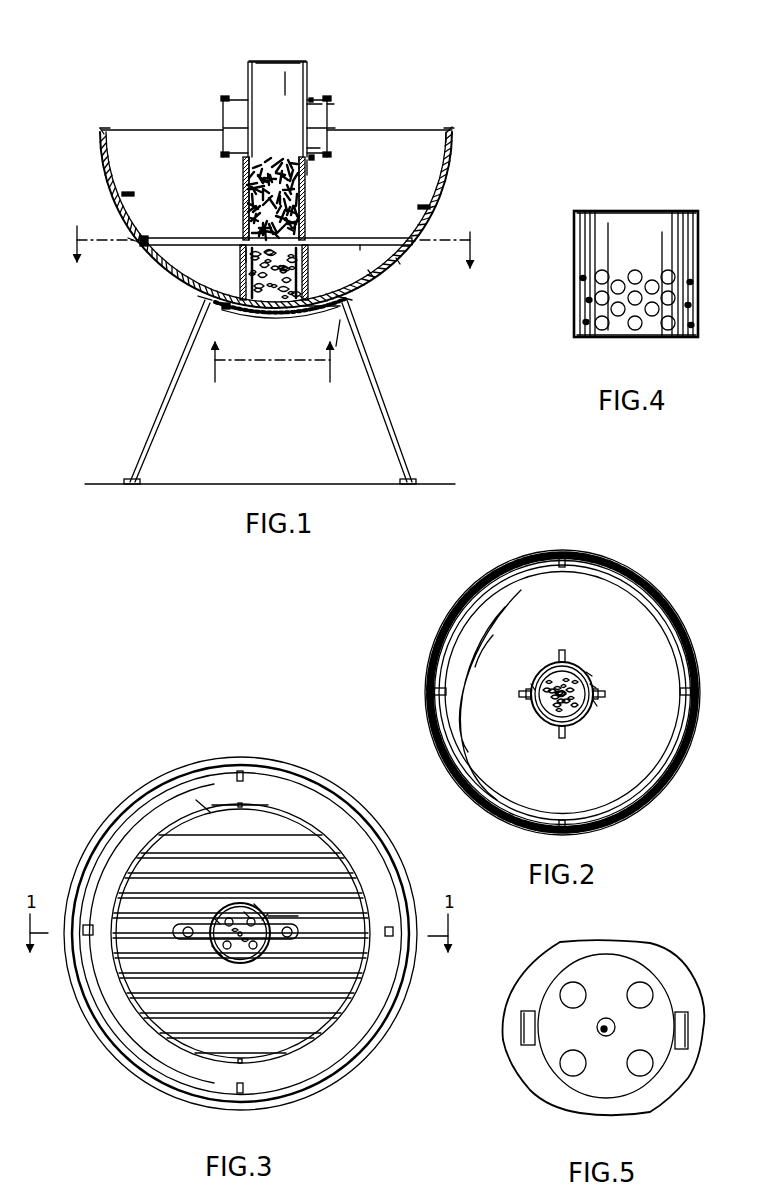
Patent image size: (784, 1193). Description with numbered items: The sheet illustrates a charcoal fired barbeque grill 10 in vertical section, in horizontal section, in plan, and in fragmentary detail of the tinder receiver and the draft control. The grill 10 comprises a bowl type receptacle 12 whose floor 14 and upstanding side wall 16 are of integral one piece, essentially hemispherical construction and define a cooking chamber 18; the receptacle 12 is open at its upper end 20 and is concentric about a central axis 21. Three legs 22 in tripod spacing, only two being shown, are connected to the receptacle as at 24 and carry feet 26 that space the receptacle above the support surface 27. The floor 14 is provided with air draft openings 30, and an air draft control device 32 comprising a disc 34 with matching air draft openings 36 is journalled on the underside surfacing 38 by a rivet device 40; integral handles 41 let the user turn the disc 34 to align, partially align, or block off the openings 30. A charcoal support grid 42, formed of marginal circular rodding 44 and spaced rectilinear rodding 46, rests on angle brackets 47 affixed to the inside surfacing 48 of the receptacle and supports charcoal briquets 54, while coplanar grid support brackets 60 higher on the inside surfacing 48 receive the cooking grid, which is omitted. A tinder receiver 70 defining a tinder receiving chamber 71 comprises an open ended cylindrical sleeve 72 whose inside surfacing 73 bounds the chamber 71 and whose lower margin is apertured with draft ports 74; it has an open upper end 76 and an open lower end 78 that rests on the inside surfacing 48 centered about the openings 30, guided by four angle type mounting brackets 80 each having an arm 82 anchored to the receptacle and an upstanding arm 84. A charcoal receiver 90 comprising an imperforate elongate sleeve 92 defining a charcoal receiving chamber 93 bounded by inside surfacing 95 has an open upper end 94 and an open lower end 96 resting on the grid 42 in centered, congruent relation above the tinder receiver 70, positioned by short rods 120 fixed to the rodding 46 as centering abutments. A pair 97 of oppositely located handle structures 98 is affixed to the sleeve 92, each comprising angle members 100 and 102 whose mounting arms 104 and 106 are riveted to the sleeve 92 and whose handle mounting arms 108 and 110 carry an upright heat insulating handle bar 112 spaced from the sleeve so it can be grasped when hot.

In FIG. 1, the barbeque grill 10 is at (462, 135).
In FIG. 2, the barbeque grill 10 is at (656, 545).
In FIG. 3, the barbeque grill 10 is at (261, 736).
In FIG. 1, the receptacle 12 is at (453, 176).
In FIG. 2, the receptacle 12 is at (689, 625).
In FIG. 3, the receptacle 12 is at (301, 760).
In FIG. 1, the floor 14 is at (374, 296).
In FIG. 1, the side wall 16 is at (453, 144).
In FIG. 3, the side wall 16 is at (345, 782).
In FIG. 1, the cooking chamber 18 is at (409, 153).
In FIG. 3, the cooking chamber 18 is at (142, 822).
In FIG. 1, the upper end 20 is at (104, 129).
In FIG. 1, the central axis 21 is at (275, 274).
In FIG. 2, the central axis 21 is at (552, 702).
In FIG. 3, the central axis 21 is at (240, 966).
In FIG. 1, the legs 22 is at (163, 398).
In FIG. 1, the leg connection 24 is at (190, 306).
In FIG. 1, the feet 26 is at (126, 478).
In FIG. 1, the support surface 27 is at (256, 484).
In FIG. 1, the air draft openings 30 is at (240, 290).
In FIG. 3, the air draft openings 30 is at (216, 920).
In FIG. 1, the air draft control device 32 is at (228, 306).
In FIG. 5, the air draft control device 32 is at (566, 1095).
In FIG. 5, the disc 34 is at (621, 972).
In FIG. 1, the disc air draft openings 36 is at (292, 314).
In FIG. 5, the disc air draft openings 36 is at (643, 990).
In FIG. 1, the underside surfacing 38 is at (398, 262).
In FIG. 5, the rivet device 40 is at (624, 1023).
In FIG. 1, the handles 41 is at (338, 350).
In FIG. 5, the handles 41 is at (524, 1022).
In FIG. 1, the charcoal support grid 42 is at (366, 250).
In FIG. 3, the charcoal support grid 42 is at (341, 852).
In FIG. 3, the marginal circular rodding 44 is at (361, 880).
In FIG. 3, the rectilinear rodding 46 is at (200, 800).
In FIG. 1, the angle brackets 47 is at (146, 252).
In FIG. 1, the inside surfacing 48 is at (134, 236).
In FIG. 1, the charcoal briquets 54 is at (272, 156).
In FIG. 1, the grid support brackets 60 is at (128, 190).
In FIG. 1, the tinder receiver 70 is at (313, 250).
In FIG. 4, the tinder receiver 70 is at (703, 232).
In FIG. 2, the tinder receiver 70 is at (595, 720).
In FIG. 3, the tinder receiver 70 is at (268, 958).
In FIG. 1, the tinder receiving chamber 71 is at (241, 262).
In FIG. 2, the tinder receiving chamber 71 is at (598, 686).
In FIG. 4, the sleeve 72 is at (645, 228).
In FIG. 2, the sleeve 72 is at (552, 722).
In FIG. 3, the sleeve 72 is at (226, 960).
In FIG. 2, the inside surfacing 73 is at (592, 672).
In FIG. 4, the draft openings or ports 74 is at (635, 324).
In FIG. 1, the open upper end 76 is at (232, 238).
In FIG. 4, the open upper end 76 is at (606, 212).
In FIG. 4, the open lower end 78 is at (685, 338).
In FIG. 2, the mounting brackets 80 is at (576, 645).
In FIG. 1, the arm 82 is at (373, 276).
In FIG. 2, the arm 82 is at (523, 694).
In FIG. 1, the upstanding arm 84 is at (306, 292).
In FIG. 2, the upstanding arm 84 is at (532, 680).
In FIG. 1, the charcoal receiver 90 is at (292, 60).
In FIG. 3, the charcoal receiver 90 is at (216, 950).
In FIG. 1, the elongate sleeve 92 is at (272, 80).
In FIG. 1, the charcoal receiving chamber 93 is at (243, 186).
In FIG. 3, the charcoal receiving chamber 93 is at (257, 905).
In FIG. 1, the open upper end 94 is at (262, 62).
In FIG. 1, the inside surfacing 95 is at (297, 228).
In FIG. 3, the inside surfacing 95 is at (246, 915).
In FIG. 1, the open lower end 96 is at (241, 215).
In FIG. 1, the pair of handle structures 97 is at (196, 86).
In FIG. 1, the handle structure 98 is at (221, 120).
In FIG. 3, the handle structure 98 is at (300, 918).
In FIG. 1, the metallic angle member 100 is at (323, 104).
In FIG. 1, the metallic angle member 102 is at (313, 158).
In FIG. 1, the mounting arm 104 is at (312, 98).
In FIG. 1, the mounting arm 106 is at (313, 180).
In FIG. 1, the handle mounting arm 108 is at (346, 105).
In FIG. 1, the handle mounting arm 110 is at (320, 148).
In FIG. 1, the handle bar 112 is at (336, 128).
In FIG. 3, the short rods 120 is at (254, 905).